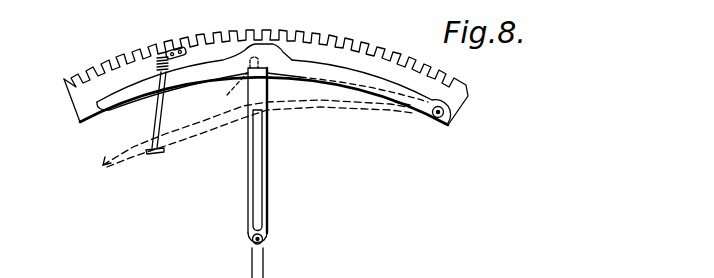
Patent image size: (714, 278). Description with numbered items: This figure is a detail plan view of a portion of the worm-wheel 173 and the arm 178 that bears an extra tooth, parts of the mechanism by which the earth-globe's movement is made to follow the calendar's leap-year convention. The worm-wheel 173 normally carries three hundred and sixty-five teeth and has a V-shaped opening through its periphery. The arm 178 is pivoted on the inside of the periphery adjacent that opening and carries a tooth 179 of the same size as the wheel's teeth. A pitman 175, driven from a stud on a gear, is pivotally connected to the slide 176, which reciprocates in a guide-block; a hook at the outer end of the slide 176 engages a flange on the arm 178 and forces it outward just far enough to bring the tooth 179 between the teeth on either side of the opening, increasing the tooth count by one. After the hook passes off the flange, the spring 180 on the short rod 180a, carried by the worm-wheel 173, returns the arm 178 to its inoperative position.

The worm-wheel 173 is at (80, 103).
The pitman 175 is at (264, 262).
The slide 176 is at (256, 184).
The arm 178 is at (314, 70).
The tooth 179 is at (262, 33).
The spring 180 is at (156, 50).
The short rod 180a is at (152, 153).